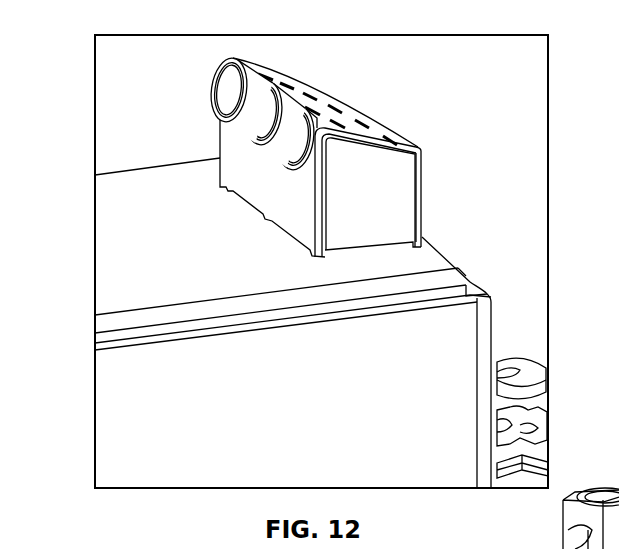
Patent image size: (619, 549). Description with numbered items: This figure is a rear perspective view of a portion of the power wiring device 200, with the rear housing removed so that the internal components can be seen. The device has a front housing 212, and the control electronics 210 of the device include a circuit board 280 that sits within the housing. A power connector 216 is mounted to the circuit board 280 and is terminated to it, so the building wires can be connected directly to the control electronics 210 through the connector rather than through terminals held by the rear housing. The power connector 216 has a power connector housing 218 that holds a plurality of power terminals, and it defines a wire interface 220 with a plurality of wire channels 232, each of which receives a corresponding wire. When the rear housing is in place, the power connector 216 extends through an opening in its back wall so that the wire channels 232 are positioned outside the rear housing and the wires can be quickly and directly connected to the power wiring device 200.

The power wiring device 200 is at (317, 143).
The control electronics 210 is at (314, 309).
The front housing 212 is at (458, 348).
The power connector 216 is at (421, 176).
The power connector housing 218 is at (400, 203).
The wire interface 220 is at (216, 101).
The wire channels 232 is at (229, 86).
The circuit board 280 is at (115, 225).